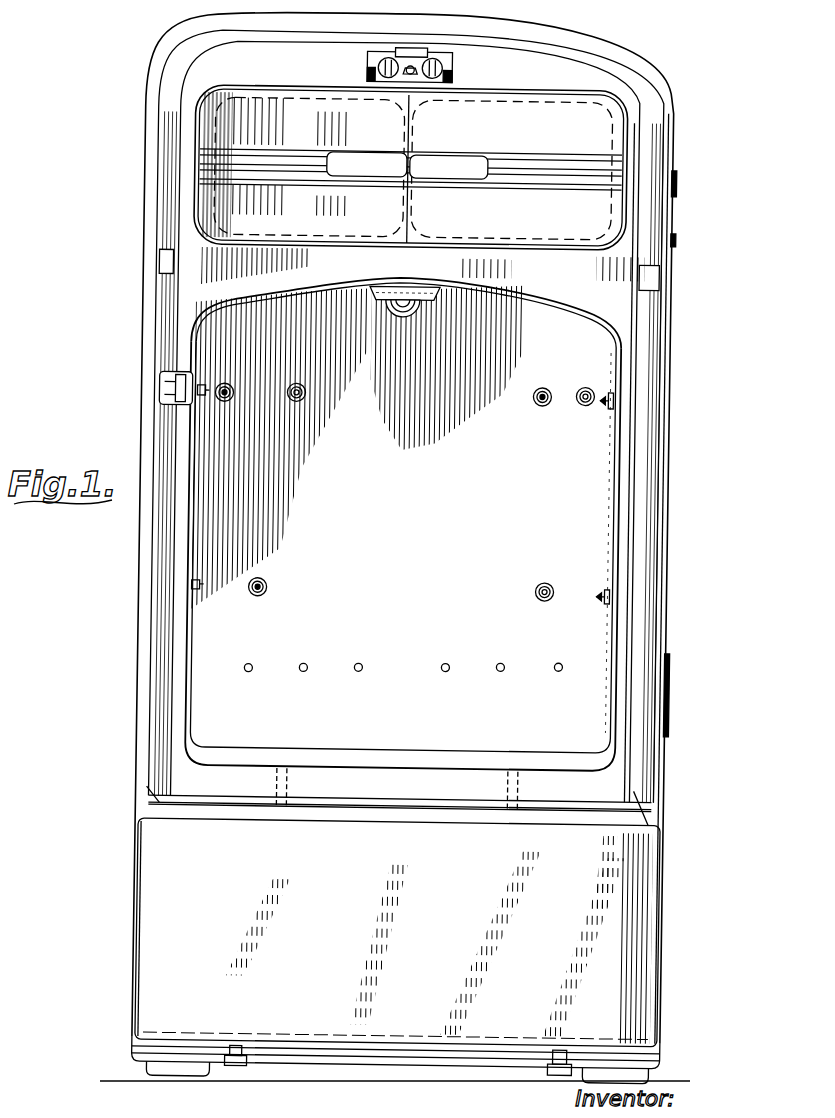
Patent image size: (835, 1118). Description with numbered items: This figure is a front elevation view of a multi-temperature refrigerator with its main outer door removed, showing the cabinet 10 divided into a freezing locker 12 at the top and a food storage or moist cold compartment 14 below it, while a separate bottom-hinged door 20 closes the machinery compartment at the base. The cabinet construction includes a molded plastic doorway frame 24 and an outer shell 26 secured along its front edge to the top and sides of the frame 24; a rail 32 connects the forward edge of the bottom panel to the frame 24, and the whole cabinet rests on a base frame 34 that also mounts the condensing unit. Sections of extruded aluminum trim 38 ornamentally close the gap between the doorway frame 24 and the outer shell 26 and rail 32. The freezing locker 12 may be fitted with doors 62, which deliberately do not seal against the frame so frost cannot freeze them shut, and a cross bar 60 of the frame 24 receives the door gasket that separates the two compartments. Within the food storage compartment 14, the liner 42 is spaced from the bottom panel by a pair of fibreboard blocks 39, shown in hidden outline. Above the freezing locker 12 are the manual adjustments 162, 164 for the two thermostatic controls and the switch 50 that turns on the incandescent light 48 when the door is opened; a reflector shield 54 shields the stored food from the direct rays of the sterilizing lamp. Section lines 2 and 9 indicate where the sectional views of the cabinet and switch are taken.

The section line 2- 2 is at (404, 0).
The section line 9- 9 is at (333, 66).
The cabinet 10 is at (669, 341).
The freezing locker 12 is at (240, 141).
The food storage compartment 14 is at (400, 513).
The door 20 is at (605, 924).
The doorway frame 24 is at (206, 281).
The outer shell 26 is at (669, 405).
The rail 32 is at (187, 819).
The base frame 34 is at (138, 1058).
The extruded aluminum trim 38 is at (642, 152).
The blocks 39 is at (286, 775).
The food storage compartment liner 42 is at (576, 551).
The incandescent light 48 is at (402, 318).
The switch 50 is at (404, 66).
The reflector shield 54 is at (394, 291).
The cross bar 60 is at (430, 273).
The doors 62 is at (352, 224).
The manual adjustment 162 is at (375, 77).
The manual adjustment 164 is at (434, 80).